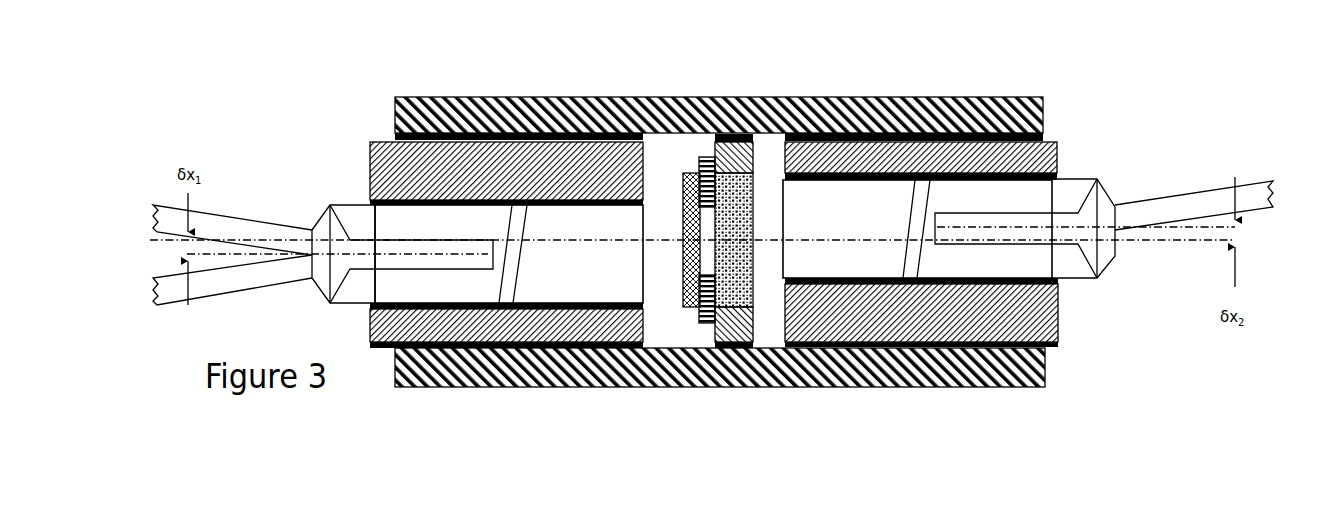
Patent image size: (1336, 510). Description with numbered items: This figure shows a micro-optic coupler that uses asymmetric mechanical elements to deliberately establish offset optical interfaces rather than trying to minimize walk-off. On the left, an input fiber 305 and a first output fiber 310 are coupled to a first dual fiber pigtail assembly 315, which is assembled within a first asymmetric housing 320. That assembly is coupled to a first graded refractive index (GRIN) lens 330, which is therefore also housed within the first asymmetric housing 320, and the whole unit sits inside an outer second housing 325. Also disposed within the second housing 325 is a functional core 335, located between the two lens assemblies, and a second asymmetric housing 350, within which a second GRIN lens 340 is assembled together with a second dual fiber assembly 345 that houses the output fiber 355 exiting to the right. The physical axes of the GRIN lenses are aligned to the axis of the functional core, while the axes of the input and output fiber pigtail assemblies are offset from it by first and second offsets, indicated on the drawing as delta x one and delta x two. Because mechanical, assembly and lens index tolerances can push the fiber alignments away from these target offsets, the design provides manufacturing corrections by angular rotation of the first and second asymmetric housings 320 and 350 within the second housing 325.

The input fiber 305 is at (232, 227).
The first output fiber 310 is at (268, 270).
The first dual fiber pigtail assembly 315 is at (350, 215).
The first asymmetric housing 320 is at (368, 142).
The second housing 325 is at (440, 97).
The first graded refractive index (GRIN) lens 330 is at (615, 240).
The functional core 335 is at (698, 157).
The second GRIN lens 340 is at (884, 213).
The second dual fiber assembly 345 is at (968, 205).
The second asymmetric housing 350 is at (1060, 140).
The output fiber 355 is at (1185, 198).